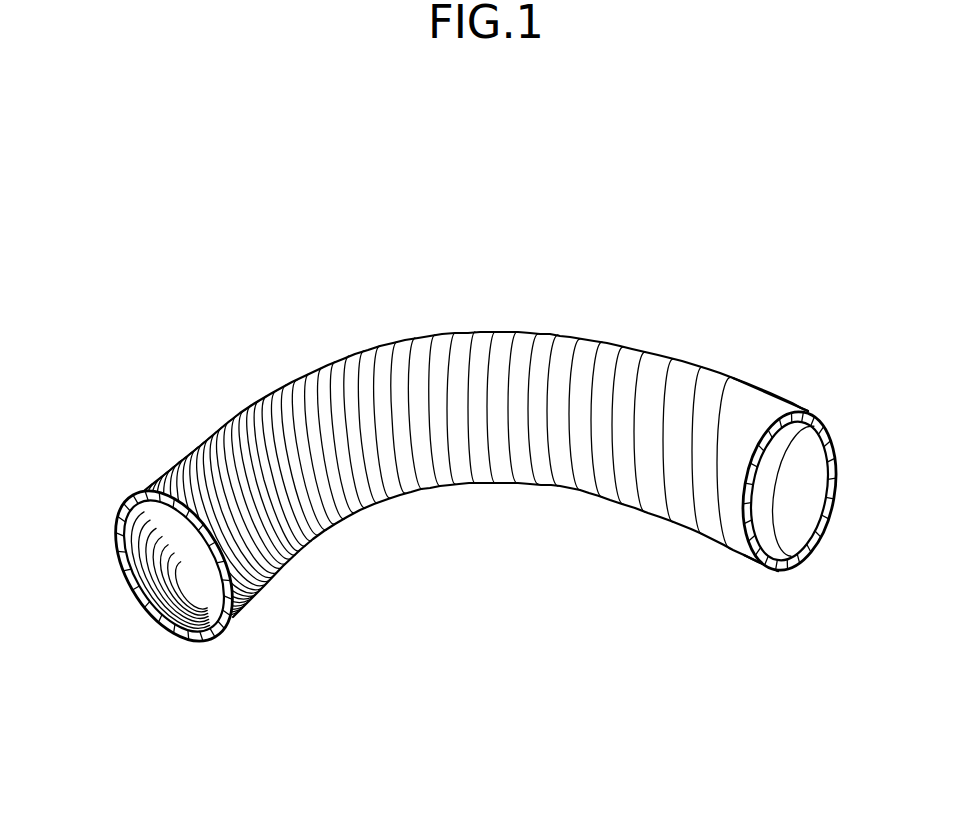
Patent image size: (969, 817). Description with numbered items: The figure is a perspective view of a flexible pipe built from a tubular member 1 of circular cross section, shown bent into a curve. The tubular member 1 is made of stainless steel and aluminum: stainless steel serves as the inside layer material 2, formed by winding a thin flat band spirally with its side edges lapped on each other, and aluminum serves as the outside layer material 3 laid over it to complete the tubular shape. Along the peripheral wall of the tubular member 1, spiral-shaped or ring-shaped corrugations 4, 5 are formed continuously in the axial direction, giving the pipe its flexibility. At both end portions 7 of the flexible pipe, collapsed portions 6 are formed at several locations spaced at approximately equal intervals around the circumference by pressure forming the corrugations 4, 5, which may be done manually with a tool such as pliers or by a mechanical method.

The tubular member 1 is at (466, 471).
The inside layer material 2 is at (815, 430).
The outside layer material 3 is at (473, 440).
The corrugations 4 is at (434, 439).
The corrugations 5 is at (262, 403).
The collapsed portions 6 is at (118, 538).
The end portions 7 is at (466, 563).